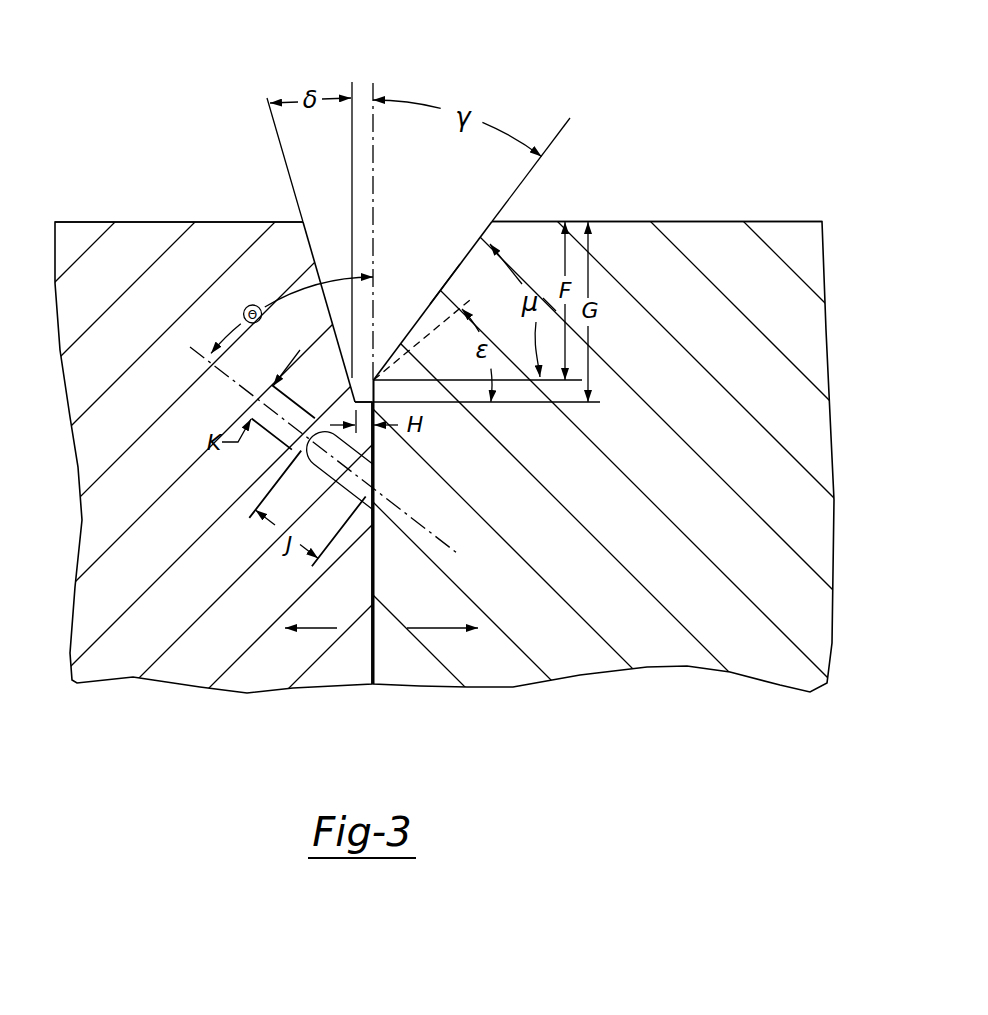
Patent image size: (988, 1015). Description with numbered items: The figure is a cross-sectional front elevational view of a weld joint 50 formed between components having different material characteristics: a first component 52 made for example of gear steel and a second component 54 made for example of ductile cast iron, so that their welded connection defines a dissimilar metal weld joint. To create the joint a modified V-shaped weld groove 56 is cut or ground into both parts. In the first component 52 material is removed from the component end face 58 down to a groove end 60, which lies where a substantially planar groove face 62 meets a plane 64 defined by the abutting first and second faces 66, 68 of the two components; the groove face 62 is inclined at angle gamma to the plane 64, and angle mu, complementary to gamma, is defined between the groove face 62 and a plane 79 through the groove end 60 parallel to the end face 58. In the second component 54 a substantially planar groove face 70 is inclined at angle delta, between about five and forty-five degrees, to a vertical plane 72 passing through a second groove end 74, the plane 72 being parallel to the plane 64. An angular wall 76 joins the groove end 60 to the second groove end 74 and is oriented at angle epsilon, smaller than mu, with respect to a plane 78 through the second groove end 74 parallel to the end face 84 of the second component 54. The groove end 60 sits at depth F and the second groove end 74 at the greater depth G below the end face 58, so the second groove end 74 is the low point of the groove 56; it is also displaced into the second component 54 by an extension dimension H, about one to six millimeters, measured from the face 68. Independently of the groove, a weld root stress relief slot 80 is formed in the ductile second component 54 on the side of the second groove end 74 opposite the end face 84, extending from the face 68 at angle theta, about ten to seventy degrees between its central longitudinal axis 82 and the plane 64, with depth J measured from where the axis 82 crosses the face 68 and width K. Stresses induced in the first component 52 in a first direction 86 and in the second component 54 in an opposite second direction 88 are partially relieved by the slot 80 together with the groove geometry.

The weld joint 50 is at (566, 82).
The first component 52 is at (690, 452).
The second component 54 is at (154, 452).
The modified V-shaped weld groove 56 is at (485, 230).
The component end face 58 is at (753, 219).
The groove end 60 is at (377, 378).
The groove face 62 is at (439, 286).
The plane 64 is at (374, 185).
The first face 66 is at (371, 588).
The second face 68 is at (376, 572).
The groove face 70 is at (314, 249).
The plane 72 is at (351, 125).
The second groove end 74 is at (354, 400).
The angular wall 76 is at (363, 378).
The plane 78 is at (538, 404).
The plane 79 is at (520, 378).
The weld root stress relief slot 80 is at (340, 483).
The central longitudinal axis 82 is at (407, 513).
The end face 84 is at (112, 220).
The first direction 86 is at (442, 628).
The second direction 88 is at (320, 628).